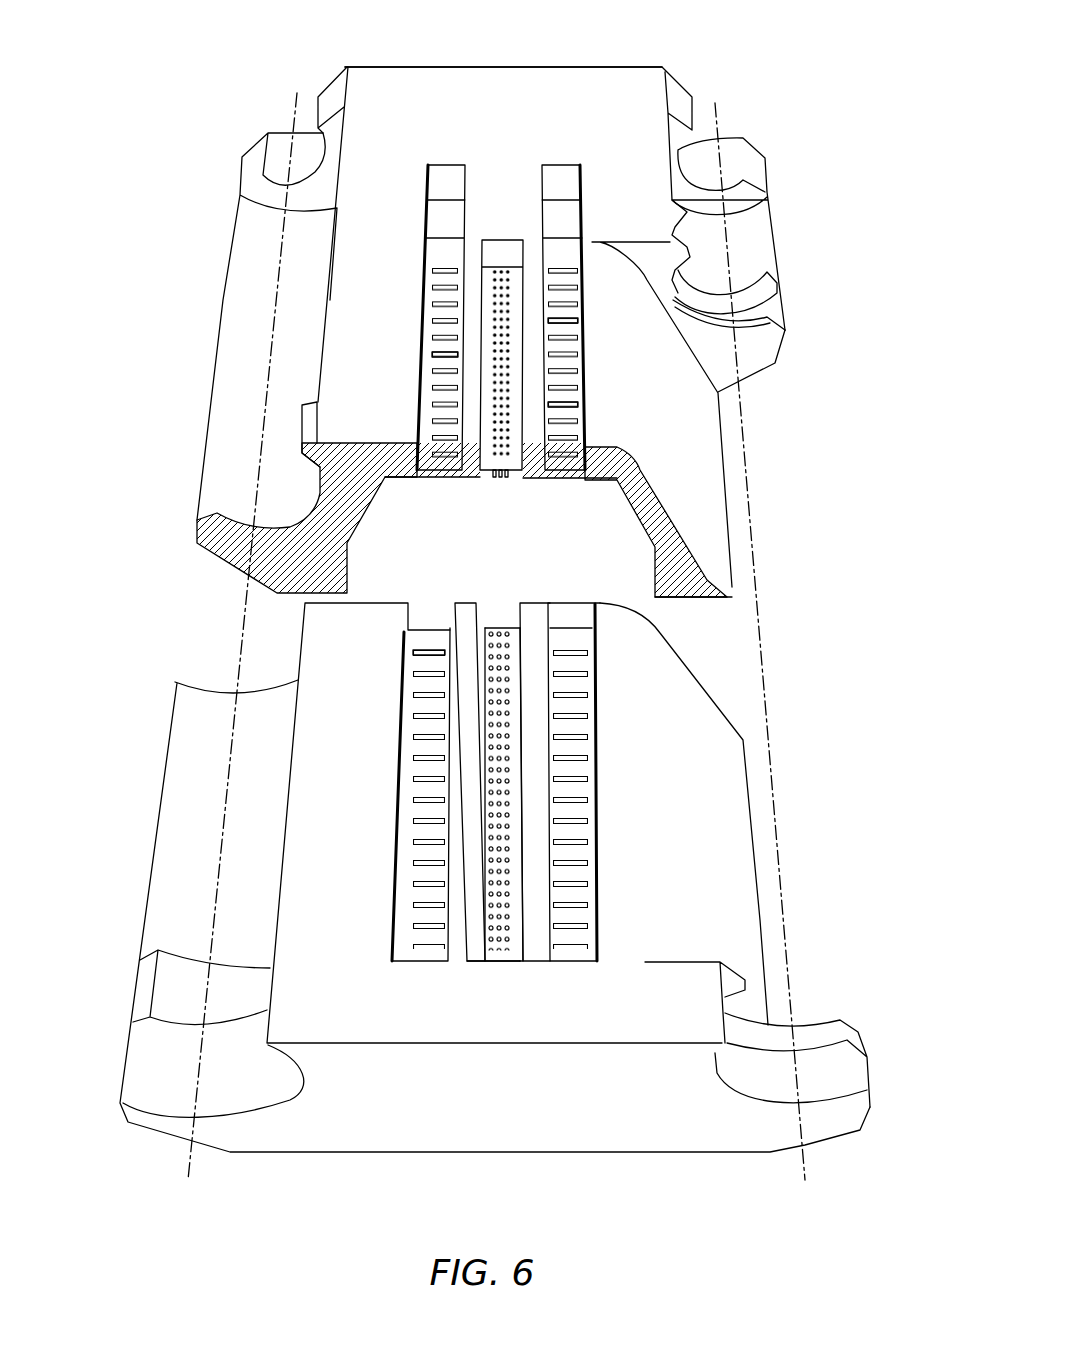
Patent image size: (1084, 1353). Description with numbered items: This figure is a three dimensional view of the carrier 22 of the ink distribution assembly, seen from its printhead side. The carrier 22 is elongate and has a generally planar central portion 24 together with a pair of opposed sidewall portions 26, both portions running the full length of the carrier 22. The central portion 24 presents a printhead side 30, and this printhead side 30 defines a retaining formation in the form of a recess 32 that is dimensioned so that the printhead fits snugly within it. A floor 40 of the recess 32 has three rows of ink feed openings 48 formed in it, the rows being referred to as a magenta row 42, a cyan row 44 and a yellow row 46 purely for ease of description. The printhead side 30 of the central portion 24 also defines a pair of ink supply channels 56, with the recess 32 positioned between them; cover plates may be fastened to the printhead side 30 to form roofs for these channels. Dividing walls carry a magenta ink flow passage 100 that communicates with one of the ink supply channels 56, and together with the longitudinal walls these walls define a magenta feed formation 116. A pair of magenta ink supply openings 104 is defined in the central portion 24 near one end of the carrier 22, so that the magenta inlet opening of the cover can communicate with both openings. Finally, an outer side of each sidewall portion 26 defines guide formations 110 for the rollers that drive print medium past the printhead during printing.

The carrier 22 is at (752, 840).
The central portion 24 is at (478, 67).
The sidewall portions 26 is at (195, 537).
The printhead side 30 is at (628, 83).
The recess 32 is at (485, 708).
The floor 40 is at (481, 788).
The magenta row 42 is at (495, 968).
The cyan row 44 is at (509, 968).
The yellow row 46 is at (485, 968).
The ink feed openings 48 is at (481, 810).
The ink supply channels 56 is at (440, 363).
The magenta ink flow passage 100 is at (572, 320).
The magenta ink supply openings 104 is at (447, 205).
The guide formations 110 is at (257, 150).
The magenta feed formation 116 is at (418, 392).